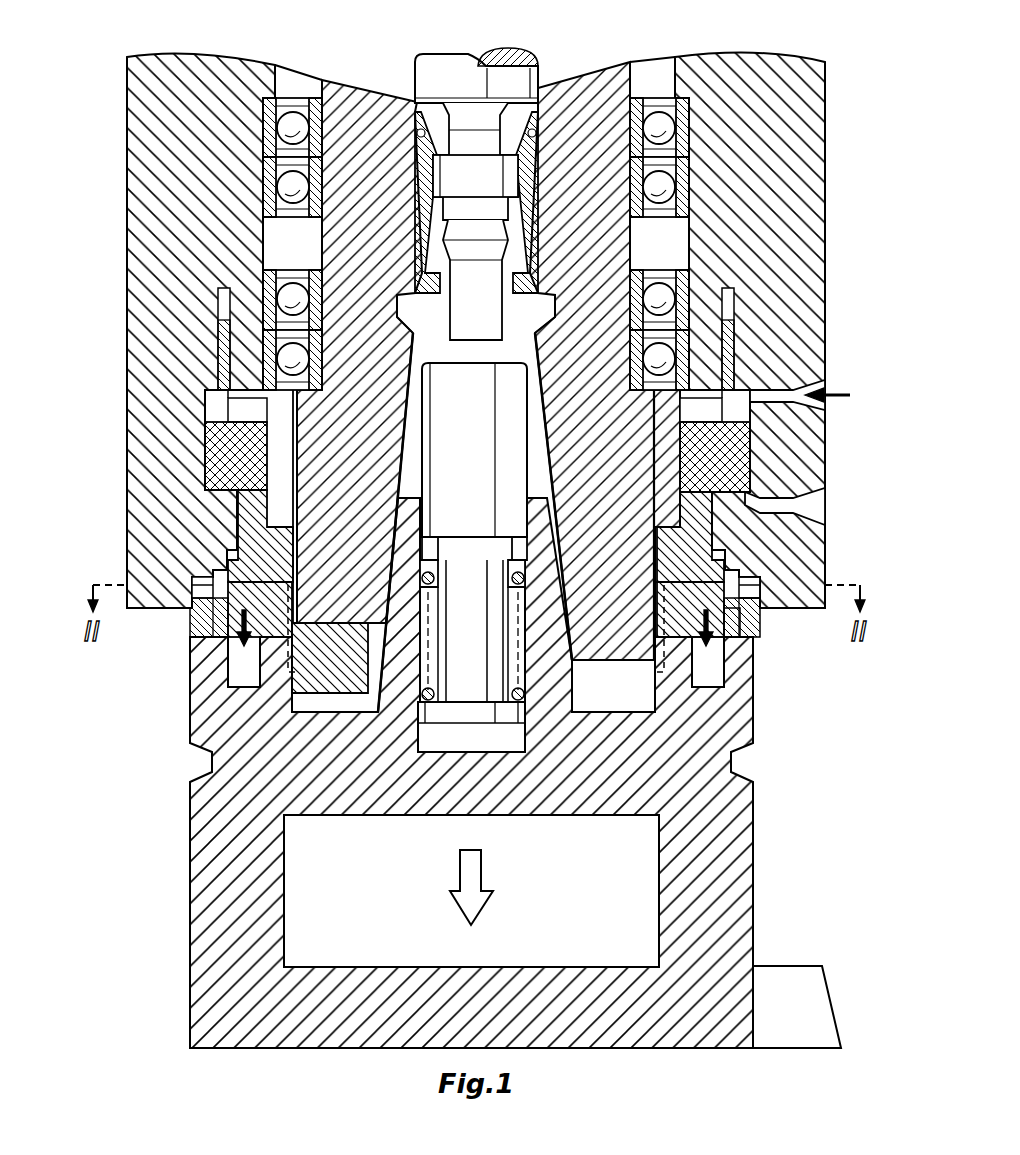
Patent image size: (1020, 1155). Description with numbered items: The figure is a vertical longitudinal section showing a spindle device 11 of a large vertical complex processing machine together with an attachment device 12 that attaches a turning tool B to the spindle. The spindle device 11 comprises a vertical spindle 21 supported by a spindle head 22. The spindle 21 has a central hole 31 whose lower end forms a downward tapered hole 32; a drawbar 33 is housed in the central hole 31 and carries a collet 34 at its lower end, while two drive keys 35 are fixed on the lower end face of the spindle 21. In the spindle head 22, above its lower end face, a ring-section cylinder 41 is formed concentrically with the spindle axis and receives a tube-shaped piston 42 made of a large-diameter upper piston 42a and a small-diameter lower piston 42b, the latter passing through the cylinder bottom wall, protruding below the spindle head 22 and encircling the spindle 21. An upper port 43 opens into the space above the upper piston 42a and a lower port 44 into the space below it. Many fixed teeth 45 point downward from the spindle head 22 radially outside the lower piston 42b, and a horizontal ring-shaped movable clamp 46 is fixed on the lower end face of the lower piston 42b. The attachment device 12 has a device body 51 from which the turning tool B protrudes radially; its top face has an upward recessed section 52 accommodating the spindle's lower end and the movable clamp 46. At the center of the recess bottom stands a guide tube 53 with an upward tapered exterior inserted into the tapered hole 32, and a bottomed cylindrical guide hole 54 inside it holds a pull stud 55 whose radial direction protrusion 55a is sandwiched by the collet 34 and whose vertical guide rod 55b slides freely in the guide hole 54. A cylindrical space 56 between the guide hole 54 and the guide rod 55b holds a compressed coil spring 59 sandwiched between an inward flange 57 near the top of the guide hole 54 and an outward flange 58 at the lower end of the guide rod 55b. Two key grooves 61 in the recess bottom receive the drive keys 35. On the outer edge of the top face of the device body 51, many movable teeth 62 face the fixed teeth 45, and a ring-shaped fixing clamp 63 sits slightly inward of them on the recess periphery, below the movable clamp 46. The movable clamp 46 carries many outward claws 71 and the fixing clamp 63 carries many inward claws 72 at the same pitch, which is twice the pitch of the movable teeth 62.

The spindle device 11 is at (127, 332).
The attachment device 12 is at (160, 818).
The spindle 21 is at (370, 108).
The spindle head 22 is at (165, 93).
The central hole 31 is at (535, 234).
The tapered hole 32 is at (545, 479).
The drawbar 33 is at (530, 73).
The collet 34 is at (423, 243).
The drive key 35 is at (330, 694).
The cylinder 41 is at (205, 398).
The piston 42 is at (205, 451).
The upper piston 42a is at (267, 448).
The lower piston 42b is at (288, 554).
The upper port 43 is at (825, 389).
The lower port 44 is at (820, 516).
The fixed teeth 45 is at (200, 578).
The movable clamp 46 is at (215, 646).
The device body 51 is at (213, 953).
The recessed section 52 is at (648, 712).
The guide tube 53 is at (543, 554).
The guide hole 54 is at (528, 529).
The pull stud 55 is at (505, 423).
The radial direction protrusion 55a is at (530, 258).
The guide rod 55b is at (498, 609).
The cylindrical space 56 is at (520, 631).
The inward flange 57 is at (508, 567).
The outward flange 58 is at (512, 713).
The compressed coil spring 59 is at (424, 698).
The key groove 61 is at (292, 712).
The movable teeth 62 is at (752, 586).
The fixing clamp 63 is at (735, 616).
The outward claws 71 is at (725, 633).
The inward claws 72 is at (200, 618).
The turning tool B is at (800, 1030).